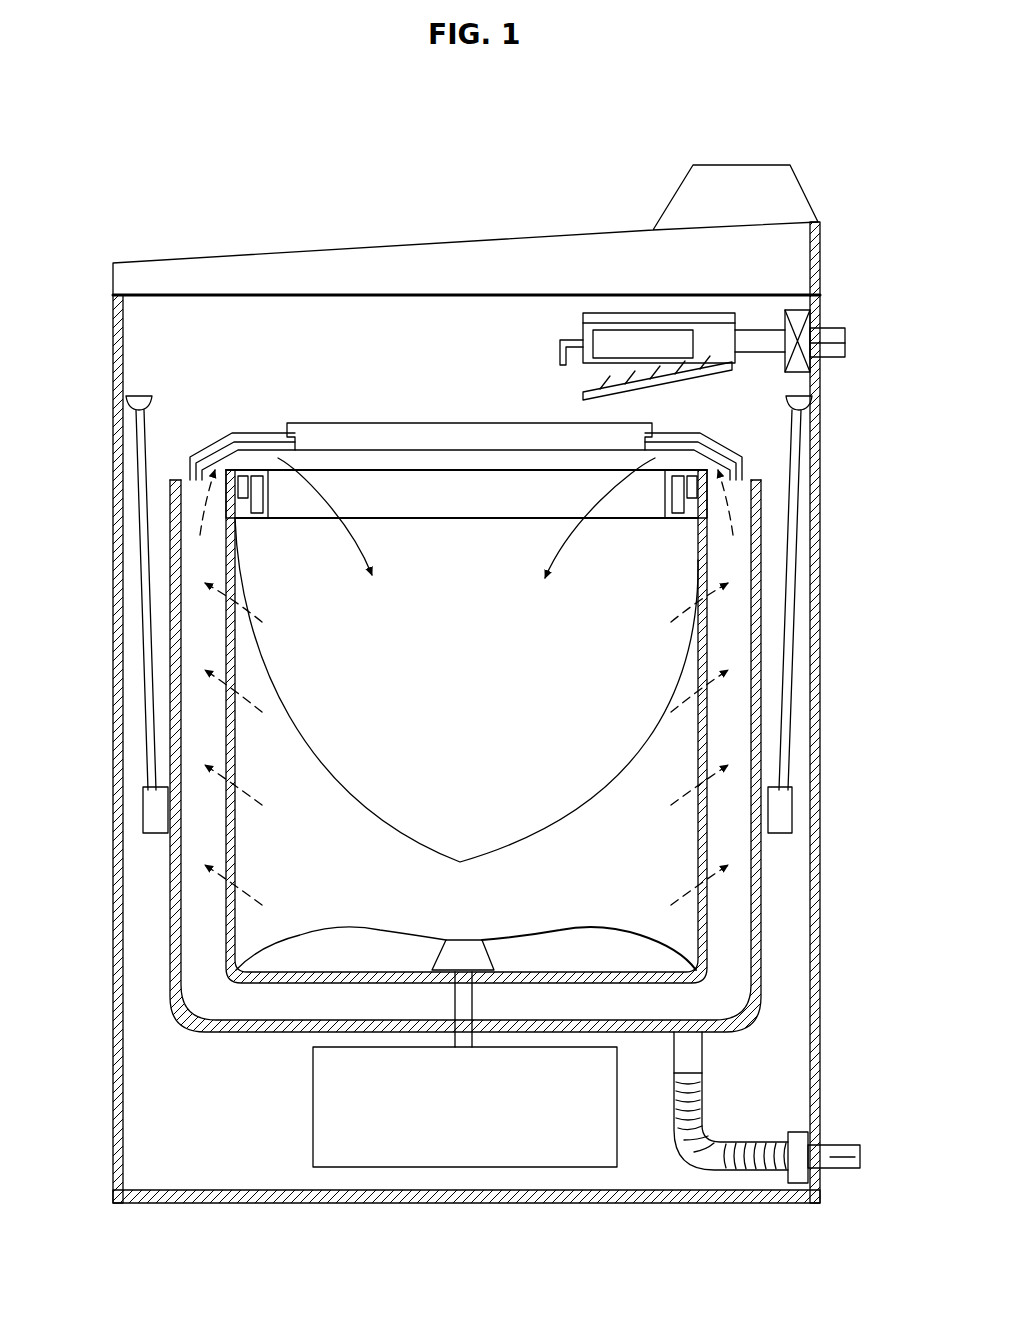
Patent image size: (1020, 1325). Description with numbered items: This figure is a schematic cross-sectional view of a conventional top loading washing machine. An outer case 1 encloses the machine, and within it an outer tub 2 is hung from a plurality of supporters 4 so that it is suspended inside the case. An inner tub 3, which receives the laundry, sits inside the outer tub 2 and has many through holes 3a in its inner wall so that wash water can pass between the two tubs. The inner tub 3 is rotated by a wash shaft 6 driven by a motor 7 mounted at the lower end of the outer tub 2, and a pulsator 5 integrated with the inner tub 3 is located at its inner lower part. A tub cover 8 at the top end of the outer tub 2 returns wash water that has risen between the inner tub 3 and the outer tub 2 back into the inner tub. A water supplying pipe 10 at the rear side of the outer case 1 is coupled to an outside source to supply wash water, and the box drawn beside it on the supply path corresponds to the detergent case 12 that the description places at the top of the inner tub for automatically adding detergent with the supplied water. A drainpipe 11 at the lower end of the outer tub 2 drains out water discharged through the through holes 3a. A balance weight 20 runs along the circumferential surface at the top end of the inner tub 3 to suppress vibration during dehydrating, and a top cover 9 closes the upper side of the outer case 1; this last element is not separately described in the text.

The outer case 1 is at (820, 578).
The outer tub 2 is at (760, 706).
The inner tub 3 is at (700, 915).
The through hole 3a is at (227, 735).
The supporters 4 is at (793, 636).
The pulsator 5 is at (290, 943).
The wash shaft 6 is at (475, 992).
The motor 7 is at (350, 1140).
The tub cover 8 is at (735, 443).
The top cover 9 is at (473, 258).
The water supplying pipe 10 is at (835, 335).
The drain hose 11 is at (702, 1085).
The heater and fan unit 12 is at (583, 323).
The balance weight 20 is at (243, 518).